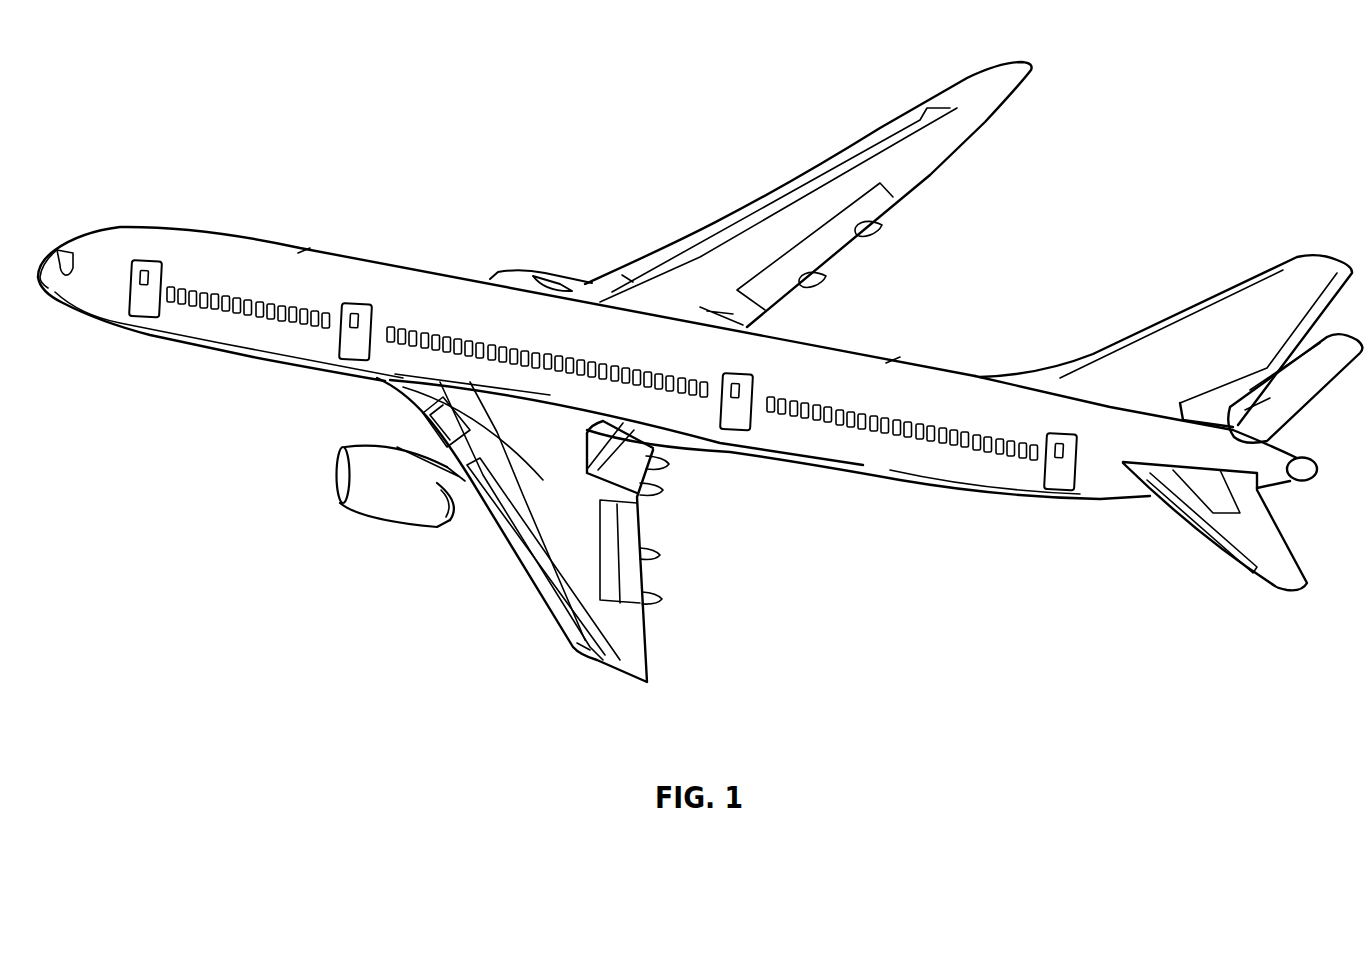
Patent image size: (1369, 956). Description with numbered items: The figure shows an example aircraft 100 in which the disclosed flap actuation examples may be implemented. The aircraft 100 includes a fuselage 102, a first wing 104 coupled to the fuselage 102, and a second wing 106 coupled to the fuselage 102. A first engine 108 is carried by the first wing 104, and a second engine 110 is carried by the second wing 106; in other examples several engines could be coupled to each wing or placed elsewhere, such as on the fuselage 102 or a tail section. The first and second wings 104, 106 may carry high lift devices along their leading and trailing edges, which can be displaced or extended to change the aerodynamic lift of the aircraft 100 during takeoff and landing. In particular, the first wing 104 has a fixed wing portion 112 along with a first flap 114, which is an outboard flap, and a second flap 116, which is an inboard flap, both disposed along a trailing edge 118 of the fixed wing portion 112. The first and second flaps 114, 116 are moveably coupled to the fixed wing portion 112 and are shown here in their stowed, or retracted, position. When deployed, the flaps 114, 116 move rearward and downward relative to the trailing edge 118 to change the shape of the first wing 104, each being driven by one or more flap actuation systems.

The aircraft 100 is at (222, 105).
The fuselage 102 is at (362, 268).
The first wing 104 is at (455, 428).
The second wing 106 is at (740, 242).
The first engine 108 is at (362, 500).
The second engine 110 is at (520, 280).
The fixed wing portion 112 is at (563, 533).
The first flap 114 is at (637, 565).
The second flap 116 is at (650, 465).
The trailing edge 118 is at (650, 497).